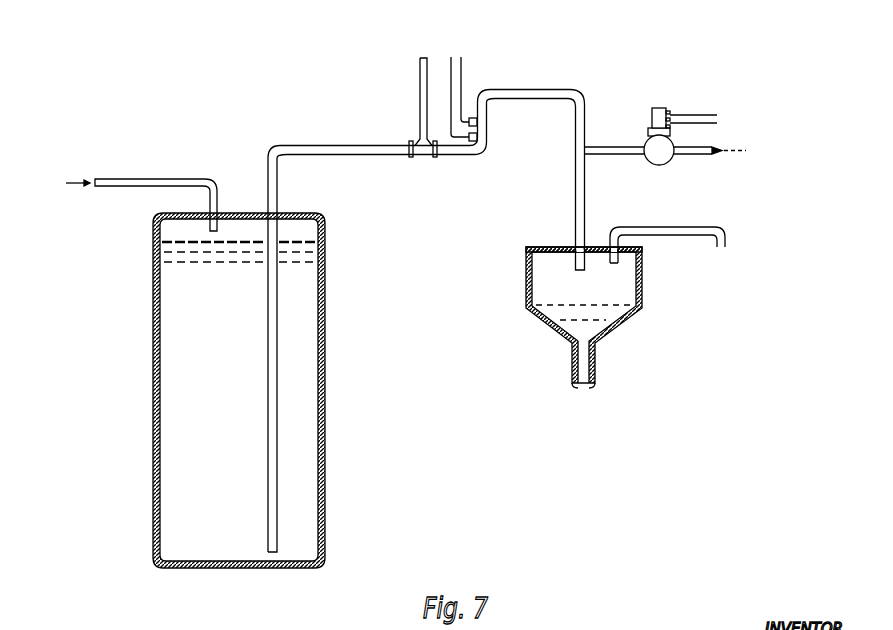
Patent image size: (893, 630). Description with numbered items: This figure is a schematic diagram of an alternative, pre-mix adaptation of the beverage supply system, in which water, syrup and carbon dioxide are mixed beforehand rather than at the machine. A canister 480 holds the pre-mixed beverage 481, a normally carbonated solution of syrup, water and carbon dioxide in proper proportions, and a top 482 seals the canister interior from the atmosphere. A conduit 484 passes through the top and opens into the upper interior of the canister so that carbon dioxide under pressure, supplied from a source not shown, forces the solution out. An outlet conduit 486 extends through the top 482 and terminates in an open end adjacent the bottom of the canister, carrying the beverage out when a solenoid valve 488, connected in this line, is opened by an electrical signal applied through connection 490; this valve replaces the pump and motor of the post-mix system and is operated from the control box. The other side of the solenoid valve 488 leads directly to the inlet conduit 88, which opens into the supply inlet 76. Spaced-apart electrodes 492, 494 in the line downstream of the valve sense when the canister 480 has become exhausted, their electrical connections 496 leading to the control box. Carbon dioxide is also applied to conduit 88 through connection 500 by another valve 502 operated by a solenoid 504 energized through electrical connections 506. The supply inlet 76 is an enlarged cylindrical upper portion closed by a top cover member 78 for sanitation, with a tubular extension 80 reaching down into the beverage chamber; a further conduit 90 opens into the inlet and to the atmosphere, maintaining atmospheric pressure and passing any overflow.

The supply inlet 76 is at (643, 288).
The top cover member 78 is at (556, 246).
The tubular extension 80 is at (595, 370).
The inlet conduit 88 is at (575, 186).
The conduit 90 is at (688, 226).
The canister 480 is at (325, 316).
The pre-mixed beverage 481 is at (153, 308).
The top 482 is at (260, 213).
The conduit 484 is at (124, 181).
The outlet conduit 486 is at (337, 141).
The solenoid valve 488 is at (424, 157).
The electrical connection 490 is at (419, 88).
The electrode 492 is at (486, 121).
The electrode 494 is at (486, 139).
The electrical connections 496 is at (462, 72).
The connection 500 is at (634, 148).
The valve 502 is at (649, 159).
The solenoid 504 is at (667, 110).
The electrical connections 506 is at (690, 114).